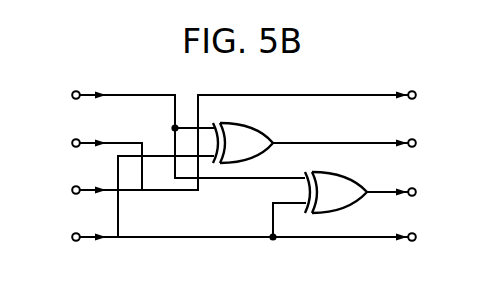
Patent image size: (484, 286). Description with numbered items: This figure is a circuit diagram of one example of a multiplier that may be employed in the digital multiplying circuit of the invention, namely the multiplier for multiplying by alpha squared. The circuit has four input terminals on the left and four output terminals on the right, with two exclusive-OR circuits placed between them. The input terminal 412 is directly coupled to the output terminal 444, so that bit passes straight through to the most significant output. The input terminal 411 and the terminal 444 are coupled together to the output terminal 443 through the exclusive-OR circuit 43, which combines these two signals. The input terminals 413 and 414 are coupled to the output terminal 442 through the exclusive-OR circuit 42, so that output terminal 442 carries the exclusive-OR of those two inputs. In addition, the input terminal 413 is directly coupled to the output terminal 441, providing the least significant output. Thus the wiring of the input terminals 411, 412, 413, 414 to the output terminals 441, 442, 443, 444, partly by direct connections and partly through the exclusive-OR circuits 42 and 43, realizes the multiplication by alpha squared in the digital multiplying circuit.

The input terminal 414 is at (78, 90).
The input terminal 413 is at (77, 138).
The input terminal 412 is at (80, 178).
The input terminal 411 is at (78, 242).
The output terminal 444 is at (413, 90).
The output terminal 443 is at (417, 142).
The output terminal 442 is at (417, 191).
The output terminal 441 is at (413, 242).
The exclusive-OR circuit 43 is at (254, 124).
The exclusive-OR circuit 42 is at (343, 172).